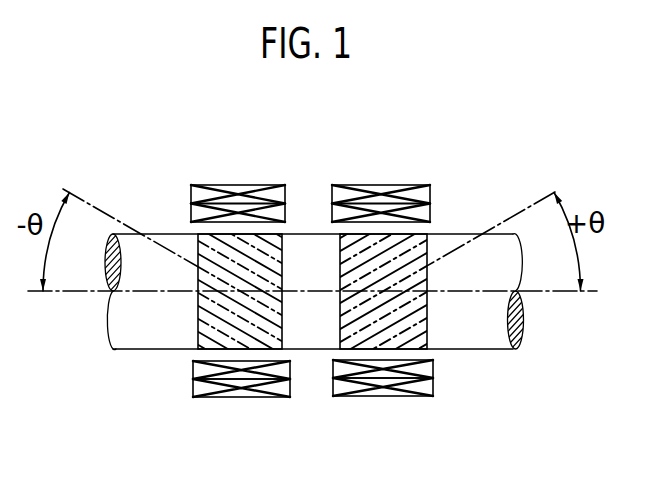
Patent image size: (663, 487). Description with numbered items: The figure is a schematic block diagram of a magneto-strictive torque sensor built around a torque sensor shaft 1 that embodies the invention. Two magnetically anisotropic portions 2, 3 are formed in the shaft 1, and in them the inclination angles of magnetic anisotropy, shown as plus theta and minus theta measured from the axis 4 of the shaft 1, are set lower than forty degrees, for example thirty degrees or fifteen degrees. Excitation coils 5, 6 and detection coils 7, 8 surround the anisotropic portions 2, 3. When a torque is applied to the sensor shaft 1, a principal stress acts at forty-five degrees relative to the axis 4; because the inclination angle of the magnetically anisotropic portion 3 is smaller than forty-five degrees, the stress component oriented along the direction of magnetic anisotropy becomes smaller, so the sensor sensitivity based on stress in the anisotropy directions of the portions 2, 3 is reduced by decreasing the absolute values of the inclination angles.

The torque sensor shaft 1 is at (138, 334).
The magnetically anisotropic portion 2 is at (198, 236).
The magnetically anisotropic portion 3 is at (430, 234).
The axis 4 is at (68, 293).
The excitation coil 5 is at (193, 372).
The excitation coil 6 is at (433, 362).
The detection coil 7 is at (262, 398).
The detection coil 8 is at (378, 397).